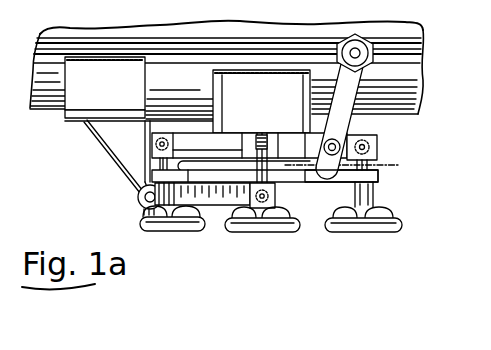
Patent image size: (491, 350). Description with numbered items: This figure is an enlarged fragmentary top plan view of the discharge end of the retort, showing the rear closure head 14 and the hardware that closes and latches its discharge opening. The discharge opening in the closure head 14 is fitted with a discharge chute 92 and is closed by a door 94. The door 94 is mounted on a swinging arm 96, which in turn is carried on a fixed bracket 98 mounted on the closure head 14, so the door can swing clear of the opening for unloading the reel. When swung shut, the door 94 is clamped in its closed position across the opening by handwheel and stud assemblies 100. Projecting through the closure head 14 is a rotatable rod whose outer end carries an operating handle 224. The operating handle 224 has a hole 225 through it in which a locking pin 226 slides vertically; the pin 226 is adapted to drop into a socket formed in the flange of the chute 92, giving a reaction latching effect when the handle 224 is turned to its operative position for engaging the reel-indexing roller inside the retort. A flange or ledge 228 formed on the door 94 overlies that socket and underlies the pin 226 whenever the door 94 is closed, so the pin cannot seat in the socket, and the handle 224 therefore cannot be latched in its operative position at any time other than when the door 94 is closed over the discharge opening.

The rear closure head 14 is at (65, 38).
The fixed bracket 98 is at (135, 80).
The discharge chute 92 is at (259, 115).
The door 94 is at (303, 183).
The swinging arm 96 is at (197, 205).
The handwheel and stud assemblies 100 is at (195, 233).
The operating handle 224 is at (340, 100).
The hole 225 is at (325, 144).
The locking pin 226 is at (378, 147).
The flange or ledge 228 is at (380, 168).